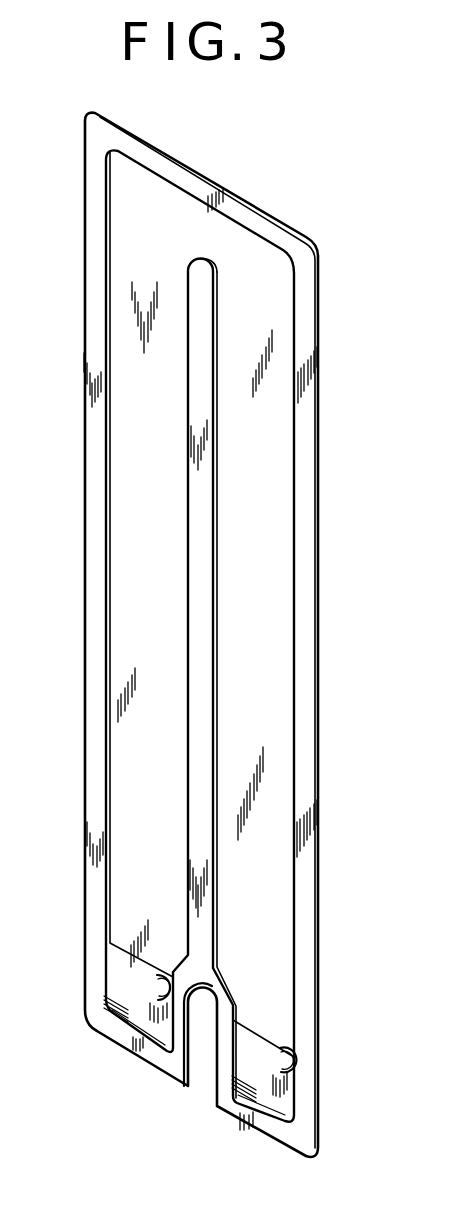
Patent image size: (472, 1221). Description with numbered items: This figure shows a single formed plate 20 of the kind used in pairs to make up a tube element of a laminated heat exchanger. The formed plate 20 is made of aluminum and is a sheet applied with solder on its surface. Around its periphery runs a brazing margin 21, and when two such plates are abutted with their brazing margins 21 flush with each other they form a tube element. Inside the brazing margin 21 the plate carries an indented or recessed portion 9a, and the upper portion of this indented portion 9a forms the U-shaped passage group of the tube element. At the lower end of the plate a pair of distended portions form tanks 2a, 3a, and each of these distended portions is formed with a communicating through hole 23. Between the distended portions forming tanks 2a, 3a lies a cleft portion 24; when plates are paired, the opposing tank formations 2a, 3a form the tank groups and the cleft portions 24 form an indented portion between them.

The formed plate 20 is at (320, 253).
The brazing margin 21 is at (308, 626).
The indented portion 9a is at (268, 530).
The communicating through hole 23 is at (150, 993).
The tank formation 2a is at (135, 1025).
The tank formation 3a is at (272, 1108).
The cleft portion 24 is at (200, 1078).